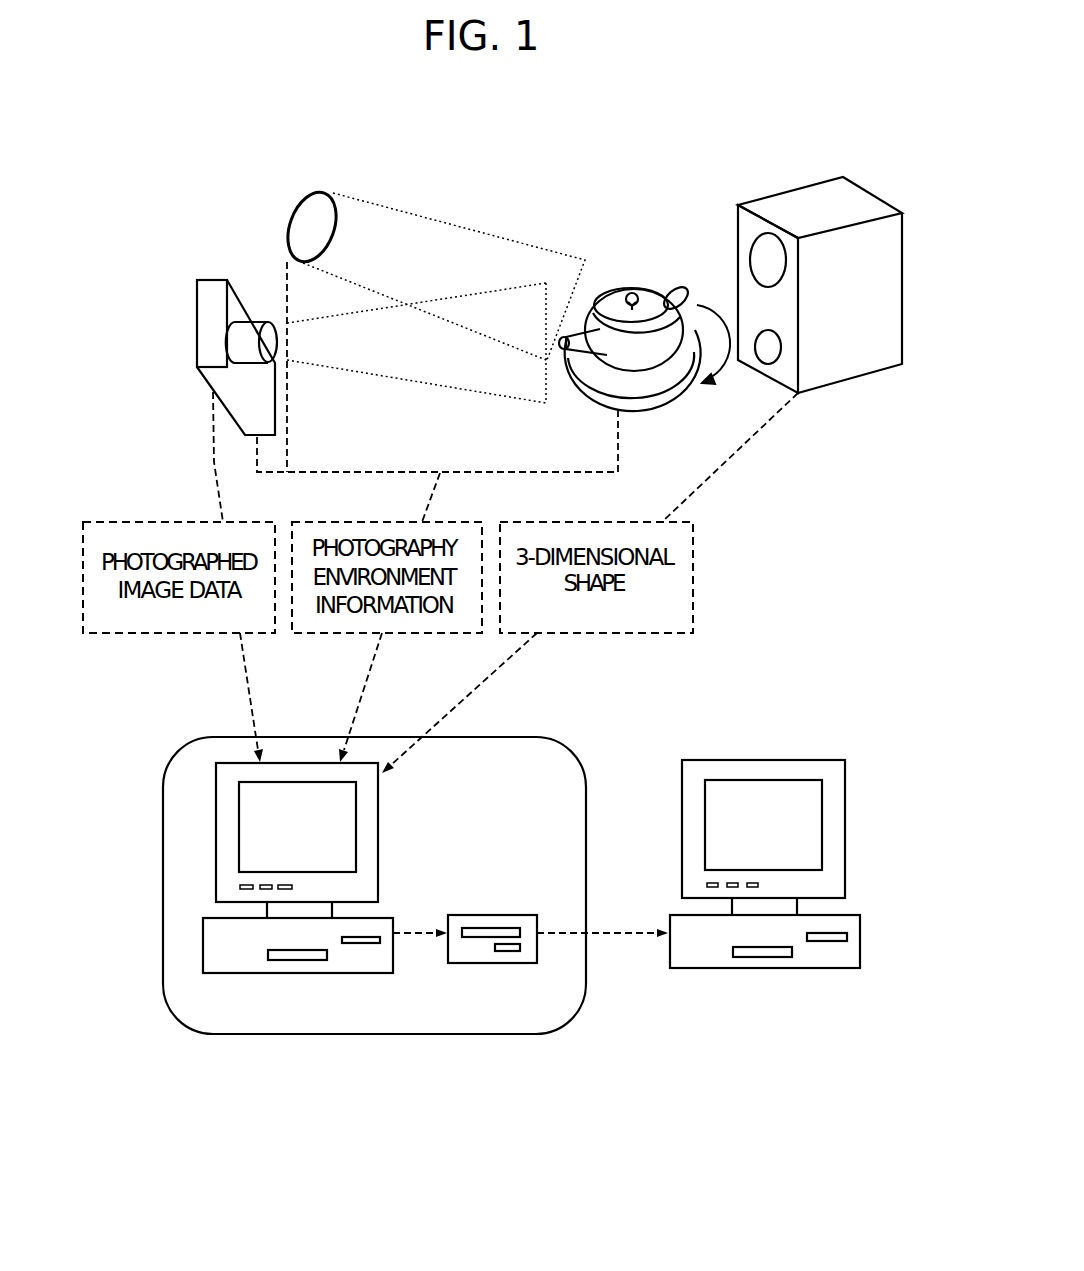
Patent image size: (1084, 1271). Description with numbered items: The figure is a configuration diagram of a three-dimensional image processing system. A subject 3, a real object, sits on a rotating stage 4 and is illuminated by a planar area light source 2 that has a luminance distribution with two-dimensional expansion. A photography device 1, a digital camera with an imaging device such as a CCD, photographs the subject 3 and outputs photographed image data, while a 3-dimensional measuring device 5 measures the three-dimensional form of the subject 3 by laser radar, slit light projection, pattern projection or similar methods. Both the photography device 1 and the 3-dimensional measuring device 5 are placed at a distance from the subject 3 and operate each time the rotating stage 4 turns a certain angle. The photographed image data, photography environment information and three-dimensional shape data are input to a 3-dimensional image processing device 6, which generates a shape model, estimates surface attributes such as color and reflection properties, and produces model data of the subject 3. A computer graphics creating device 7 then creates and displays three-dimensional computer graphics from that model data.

The photography device 1 is at (212, 282).
The planar area light source 2 is at (313, 197).
The subject 3 is at (613, 290).
The rotating stage 4 is at (648, 395).
The 3-dimensional measuring device 5 is at (792, 195).
The 3-dimensional image processing device 6 is at (396, 1036).
The computer graphics creating device 7 is at (702, 970).